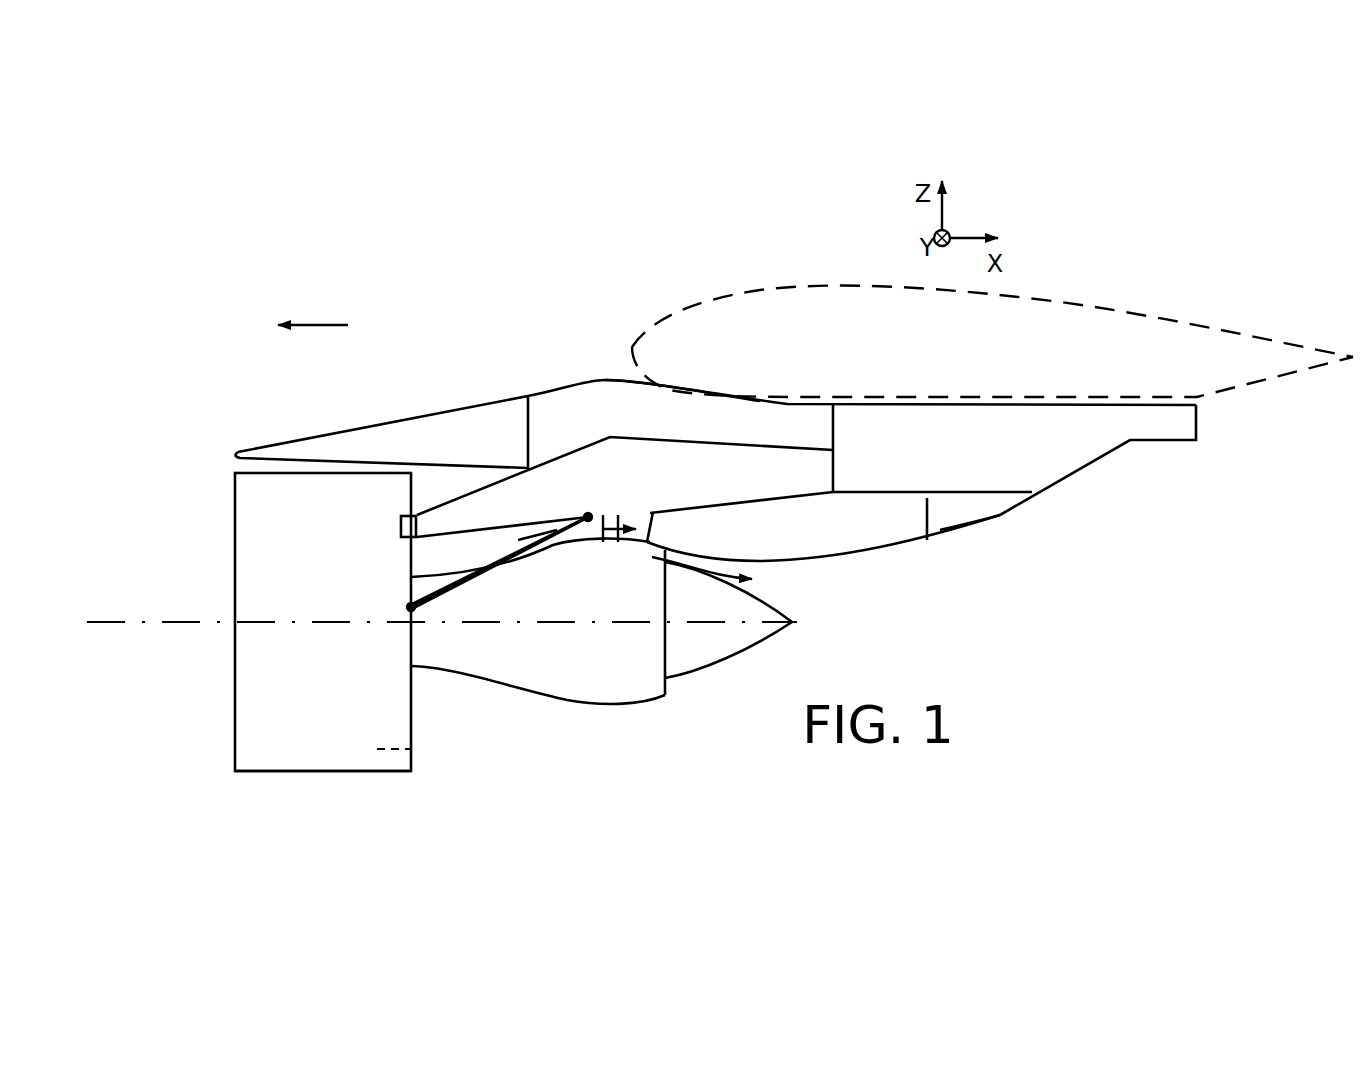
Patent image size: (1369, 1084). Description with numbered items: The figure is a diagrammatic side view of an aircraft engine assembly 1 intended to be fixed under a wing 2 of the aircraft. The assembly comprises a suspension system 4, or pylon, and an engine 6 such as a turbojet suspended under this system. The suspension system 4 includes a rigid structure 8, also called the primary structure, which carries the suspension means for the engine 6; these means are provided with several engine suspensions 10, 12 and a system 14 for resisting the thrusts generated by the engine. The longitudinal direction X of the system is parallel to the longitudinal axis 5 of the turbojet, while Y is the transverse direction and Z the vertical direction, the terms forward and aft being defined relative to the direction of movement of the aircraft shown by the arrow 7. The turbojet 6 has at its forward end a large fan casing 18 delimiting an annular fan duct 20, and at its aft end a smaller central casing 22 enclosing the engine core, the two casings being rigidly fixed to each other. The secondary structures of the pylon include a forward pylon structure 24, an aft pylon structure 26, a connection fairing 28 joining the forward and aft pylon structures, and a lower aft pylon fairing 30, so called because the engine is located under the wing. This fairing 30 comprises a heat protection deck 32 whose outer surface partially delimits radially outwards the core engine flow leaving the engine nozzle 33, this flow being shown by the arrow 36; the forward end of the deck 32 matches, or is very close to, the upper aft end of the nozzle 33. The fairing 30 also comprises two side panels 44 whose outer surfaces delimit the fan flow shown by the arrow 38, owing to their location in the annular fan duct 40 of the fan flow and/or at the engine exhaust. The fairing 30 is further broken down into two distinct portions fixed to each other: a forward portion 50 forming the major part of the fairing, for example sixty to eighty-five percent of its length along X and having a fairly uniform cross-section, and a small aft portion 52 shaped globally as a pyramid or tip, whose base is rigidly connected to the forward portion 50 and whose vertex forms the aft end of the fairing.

The aircraft engine assembly 1 is at (165, 546).
The wing 2 is at (1124, 318).
The suspension system 4 is at (627, 333).
The longitudinal axis 5 is at (95, 623).
The engine 6 is at (311, 786).
The arrow 7 is at (310, 325).
The rigid structure 8 is at (745, 455).
The engine suspension 10 is at (394, 527).
The engine suspension 12 is at (620, 510).
The system for resisting thrusts 14 is at (470, 585).
The fan casing 18 is at (248, 510).
The annular fan duct 20 is at (411, 749).
The central casing 22 is at (450, 667).
The forward pylon structure 24 is at (432, 417).
The aft pylon structure 26 is at (922, 423).
The connection fairing 28 is at (670, 402).
The aft pylon fairing 30 is at (910, 546).
The heat protection deck 32 is at (803, 561).
The engine nozzle 33 is at (667, 653).
The arrow 36 is at (737, 582).
The arrow 38 is at (537, 530).
The annular fan duct 40 is at (470, 563).
The side panels 44 is at (907, 503).
The forward portion 50 is at (870, 541).
The aft portion 52 is at (980, 518).